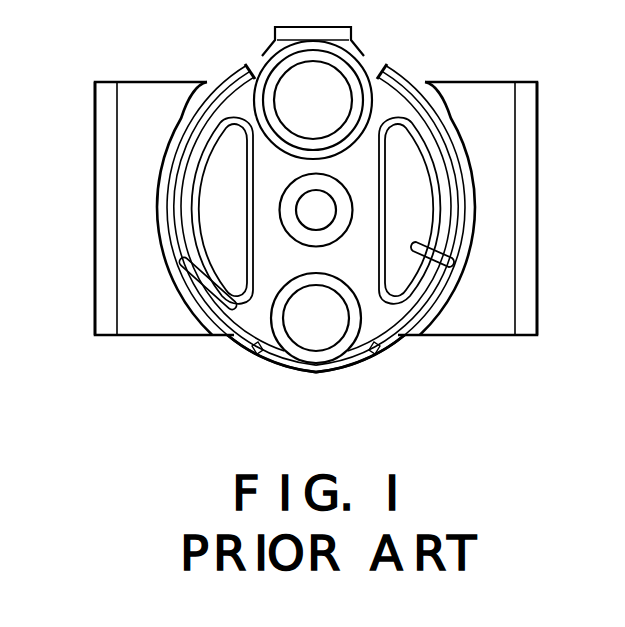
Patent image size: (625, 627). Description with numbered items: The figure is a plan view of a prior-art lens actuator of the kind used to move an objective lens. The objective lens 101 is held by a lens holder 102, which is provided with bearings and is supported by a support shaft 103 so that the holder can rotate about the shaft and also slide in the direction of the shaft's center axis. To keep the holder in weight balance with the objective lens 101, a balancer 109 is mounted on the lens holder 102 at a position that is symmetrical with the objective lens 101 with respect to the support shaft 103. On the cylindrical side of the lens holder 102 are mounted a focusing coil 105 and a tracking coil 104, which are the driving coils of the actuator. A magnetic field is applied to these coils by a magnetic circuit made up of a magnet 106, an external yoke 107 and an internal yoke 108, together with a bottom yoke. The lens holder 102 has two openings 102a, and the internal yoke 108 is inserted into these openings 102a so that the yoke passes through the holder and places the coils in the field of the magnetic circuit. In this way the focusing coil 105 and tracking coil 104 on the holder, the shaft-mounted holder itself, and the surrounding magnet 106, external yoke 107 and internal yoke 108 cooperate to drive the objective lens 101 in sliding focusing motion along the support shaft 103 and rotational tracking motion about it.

The objective lens 101 is at (360, 92).
The lens holder 102 is at (243, 103).
The openings 102a is at (210, 338).
The support shaft 103 is at (322, 212).
The tracking coil 104 is at (247, 347).
The focusing coil 105 is at (302, 372).
The magnet 106 is at (476, 98).
The external yoke 107 is at (107, 275).
The internal yoke 108 is at (232, 170).
The balancer 109 is at (330, 336).